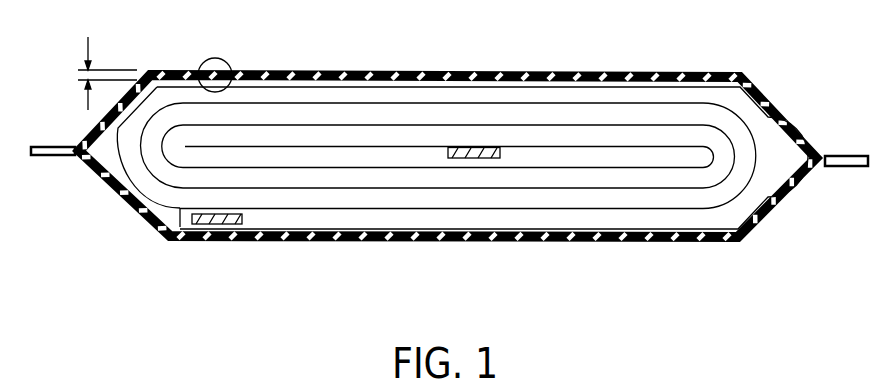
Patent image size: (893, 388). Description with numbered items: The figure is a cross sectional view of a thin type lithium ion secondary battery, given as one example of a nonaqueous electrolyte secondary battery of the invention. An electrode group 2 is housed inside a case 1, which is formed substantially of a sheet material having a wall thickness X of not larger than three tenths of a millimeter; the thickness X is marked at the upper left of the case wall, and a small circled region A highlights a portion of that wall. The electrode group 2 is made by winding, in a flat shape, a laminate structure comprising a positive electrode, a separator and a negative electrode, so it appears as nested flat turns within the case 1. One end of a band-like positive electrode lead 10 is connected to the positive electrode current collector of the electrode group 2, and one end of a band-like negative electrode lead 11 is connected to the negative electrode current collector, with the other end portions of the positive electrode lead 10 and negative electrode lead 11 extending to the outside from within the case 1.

The case 1 is at (402, 73).
The electrode group 2 is at (627, 97).
The positive electrode lead 10 is at (467, 158).
The negative electrode lead 11 is at (208, 224).
The detail region A is at (224, 58).
The wall thickness X is at (78, 75).